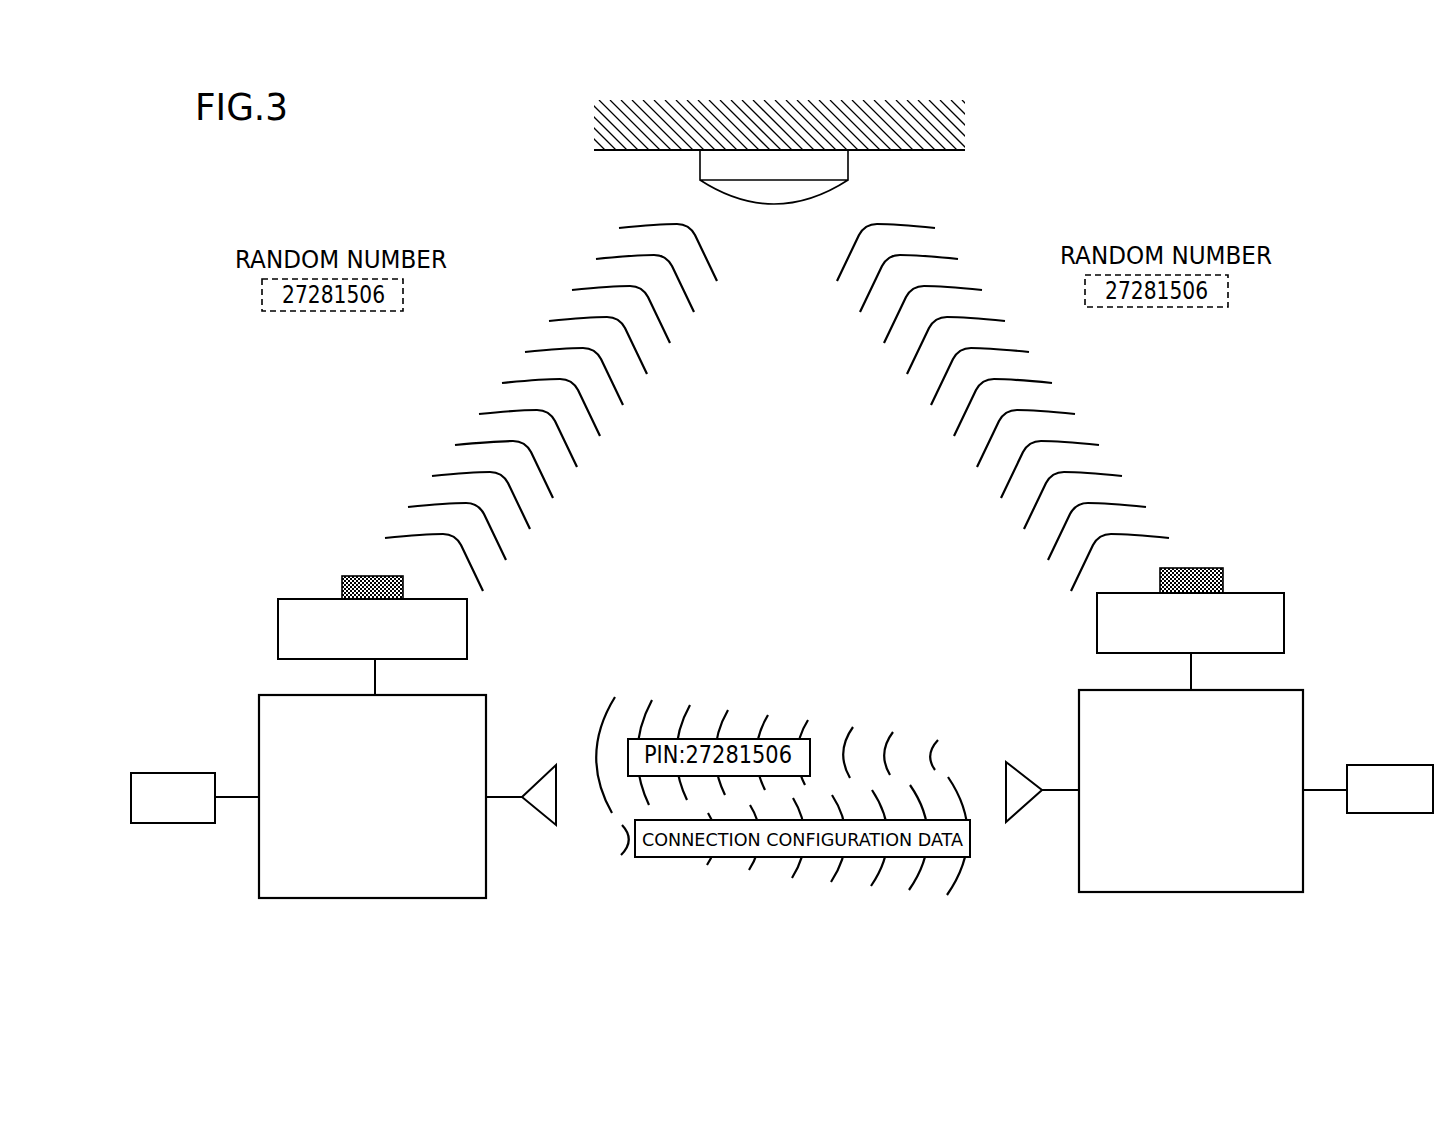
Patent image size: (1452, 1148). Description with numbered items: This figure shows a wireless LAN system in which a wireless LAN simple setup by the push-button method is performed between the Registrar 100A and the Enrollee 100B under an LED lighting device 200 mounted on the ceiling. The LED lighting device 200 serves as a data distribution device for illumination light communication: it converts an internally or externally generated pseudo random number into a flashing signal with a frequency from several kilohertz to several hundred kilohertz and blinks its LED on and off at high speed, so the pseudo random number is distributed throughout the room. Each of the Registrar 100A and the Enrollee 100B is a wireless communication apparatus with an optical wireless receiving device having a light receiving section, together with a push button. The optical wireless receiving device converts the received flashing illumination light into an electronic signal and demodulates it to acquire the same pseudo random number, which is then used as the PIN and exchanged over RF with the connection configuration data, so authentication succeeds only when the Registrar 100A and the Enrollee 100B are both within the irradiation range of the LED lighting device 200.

The LED lighting device 200 is at (866, 169).
The Registrar 100A is at (183, 579).
The Enrollee 100B is at (1440, 568).